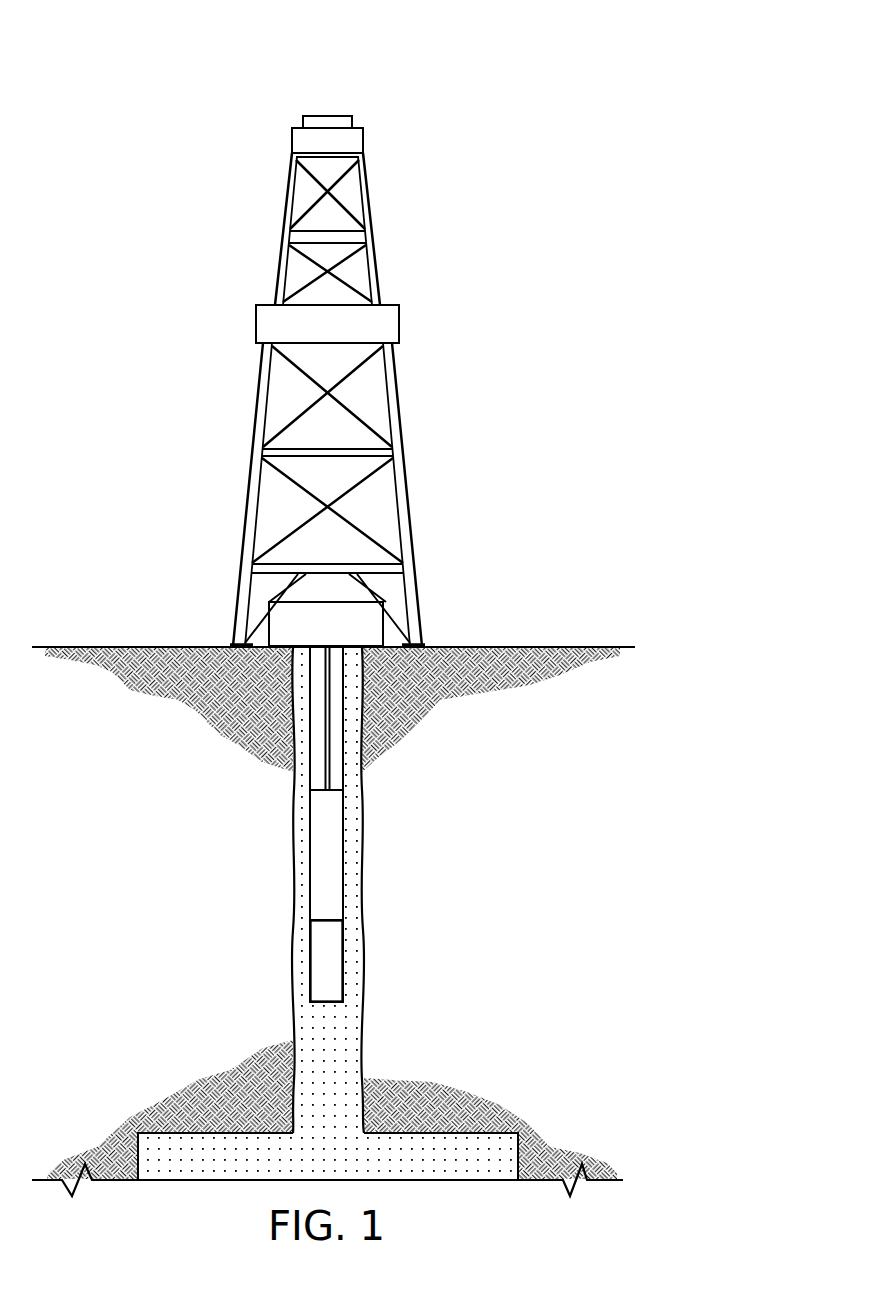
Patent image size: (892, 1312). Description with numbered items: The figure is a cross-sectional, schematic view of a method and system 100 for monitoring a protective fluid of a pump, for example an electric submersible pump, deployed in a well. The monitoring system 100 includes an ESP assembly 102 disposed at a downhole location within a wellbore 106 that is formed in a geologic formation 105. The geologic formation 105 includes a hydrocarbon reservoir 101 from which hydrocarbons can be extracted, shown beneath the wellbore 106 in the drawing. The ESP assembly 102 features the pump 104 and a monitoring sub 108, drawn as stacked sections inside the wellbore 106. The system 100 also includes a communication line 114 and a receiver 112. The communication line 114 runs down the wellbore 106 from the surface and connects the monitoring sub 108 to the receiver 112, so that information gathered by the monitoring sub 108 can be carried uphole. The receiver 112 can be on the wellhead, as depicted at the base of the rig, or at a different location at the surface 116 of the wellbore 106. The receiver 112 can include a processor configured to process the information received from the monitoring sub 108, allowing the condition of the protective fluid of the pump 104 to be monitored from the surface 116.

The monitoring system 100 is at (232, 70).
The hydrocarbon reservoir 101 is at (507, 1157).
The ESP assembly 102 is at (283, 963).
The pump 104 is at (335, 840).
The geologic formation 105 is at (114, 925).
The wellbore 106 is at (293, 887).
The monitoring sub 108 is at (335, 958).
The receiver 112 is at (278, 633).
The communication line 114 is at (323, 775).
The surface 116 is at (565, 647).